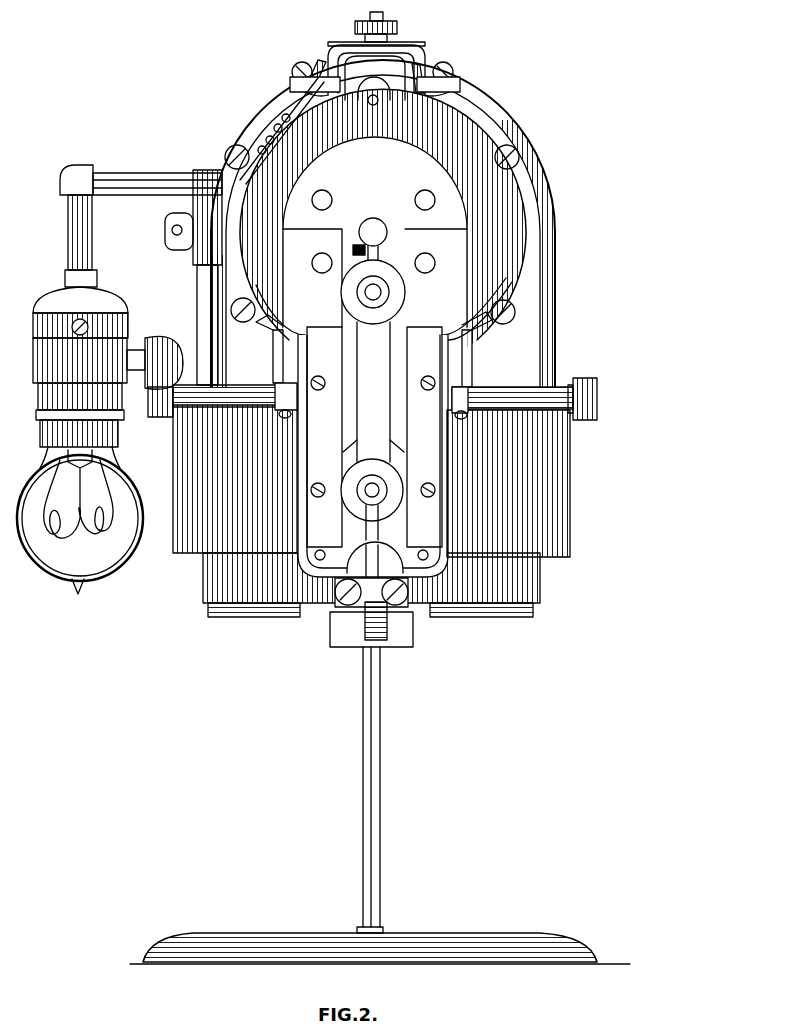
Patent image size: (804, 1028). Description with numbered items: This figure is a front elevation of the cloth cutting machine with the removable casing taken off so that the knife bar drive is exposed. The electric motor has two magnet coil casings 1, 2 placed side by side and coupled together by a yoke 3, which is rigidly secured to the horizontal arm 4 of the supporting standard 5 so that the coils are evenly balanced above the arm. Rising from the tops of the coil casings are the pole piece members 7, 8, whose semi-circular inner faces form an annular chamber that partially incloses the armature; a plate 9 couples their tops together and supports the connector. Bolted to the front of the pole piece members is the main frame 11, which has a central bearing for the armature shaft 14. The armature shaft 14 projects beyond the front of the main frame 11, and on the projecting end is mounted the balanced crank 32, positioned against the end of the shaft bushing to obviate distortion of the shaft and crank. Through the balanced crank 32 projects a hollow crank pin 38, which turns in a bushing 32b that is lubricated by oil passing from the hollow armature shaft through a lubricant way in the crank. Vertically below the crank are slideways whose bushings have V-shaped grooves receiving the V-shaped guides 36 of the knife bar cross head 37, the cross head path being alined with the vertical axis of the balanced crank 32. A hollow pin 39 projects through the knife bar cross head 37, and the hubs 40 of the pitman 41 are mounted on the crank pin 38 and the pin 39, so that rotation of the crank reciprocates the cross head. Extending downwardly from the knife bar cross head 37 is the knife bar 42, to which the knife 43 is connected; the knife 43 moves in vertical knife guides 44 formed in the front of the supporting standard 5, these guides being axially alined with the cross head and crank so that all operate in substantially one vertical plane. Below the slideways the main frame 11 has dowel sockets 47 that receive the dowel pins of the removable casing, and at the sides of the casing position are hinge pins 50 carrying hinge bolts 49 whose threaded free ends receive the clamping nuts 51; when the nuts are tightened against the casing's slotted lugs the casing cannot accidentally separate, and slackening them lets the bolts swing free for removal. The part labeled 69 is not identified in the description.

The magnet coil casing 1 is at (197, 543).
The magnet coil casing 2 is at (550, 543).
The yoke 3 is at (218, 617).
The horizontal arm 4 is at (400, 637).
The supporting standard 5 is at (382, 722).
The pole piece member 7 is at (230, 332).
The pole piece member 8 is at (515, 357).
The plate 9 is at (290, 75).
The main frame 11 is at (504, 281).
The armature shaft 14 is at (386, 230).
The balanced crank 32 is at (405, 182).
The bushing 32b is at (388, 283).
The V-shaped guides 36 is at (403, 551).
The knife bar cross head 37 is at (317, 598).
The crank pin 38 is at (381, 291).
The hollow pin 39 is at (379, 488).
The hubs 40 is at (394, 301).
The pitman 41 is at (372, 427).
The knife bar 42 is at (378, 607).
The knife 43 is at (372, 647).
The knife guides 44 is at (377, 768).
The dowel sockets 47 is at (320, 557).
The hinge bolts 49 is at (243, 398).
The hinge pins 50 is at (280, 412).
The clamping nuts 51 is at (160, 417).
The top bracket cap 69 is at (415, 50).